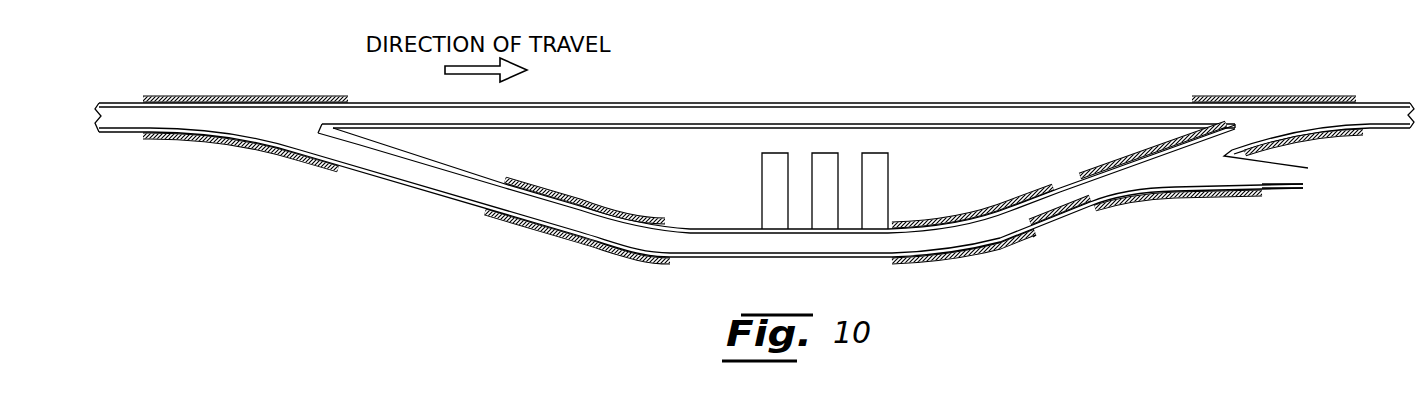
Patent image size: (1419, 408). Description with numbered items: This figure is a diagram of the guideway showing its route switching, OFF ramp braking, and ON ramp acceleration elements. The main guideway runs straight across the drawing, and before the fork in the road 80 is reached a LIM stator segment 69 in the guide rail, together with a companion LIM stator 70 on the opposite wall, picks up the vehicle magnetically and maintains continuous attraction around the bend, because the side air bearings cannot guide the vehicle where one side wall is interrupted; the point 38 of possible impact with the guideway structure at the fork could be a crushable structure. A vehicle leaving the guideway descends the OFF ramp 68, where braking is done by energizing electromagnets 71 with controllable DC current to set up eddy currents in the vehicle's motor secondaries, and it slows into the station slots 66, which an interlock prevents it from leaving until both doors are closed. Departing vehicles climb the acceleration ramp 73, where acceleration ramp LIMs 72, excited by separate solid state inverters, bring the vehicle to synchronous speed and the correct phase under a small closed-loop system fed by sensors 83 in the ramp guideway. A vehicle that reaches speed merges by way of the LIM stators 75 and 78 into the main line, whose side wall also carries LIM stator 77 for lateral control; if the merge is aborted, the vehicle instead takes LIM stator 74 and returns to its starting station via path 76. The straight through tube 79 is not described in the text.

The point of possible impact 38 is at (306, 137).
The station slots 66 is at (873, 170).
The OFF ramp 68 is at (422, 174).
The LIM stator segment 69 is at (246, 149).
The LIM stator 70 is at (254, 97).
The electromagnets 71 is at (583, 203).
The acceleration ramp LIM 72 is at (990, 210).
The acceleration ramp 73 is at (1080, 199).
The LIM stator 74 is at (1170, 200).
The LIM stator 75 is at (1134, 158).
The return path 76 is at (1287, 177).
The LIM stator 77 is at (1298, 95).
The LIM stator 78 is at (1337, 135).
The straight through tube 79 is at (819, 123).
The fork in the road 80 is at (127, 117).
The velocity and position sensors 83 is at (1033, 237).